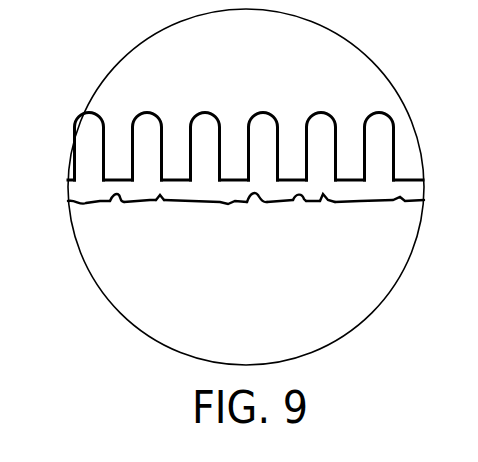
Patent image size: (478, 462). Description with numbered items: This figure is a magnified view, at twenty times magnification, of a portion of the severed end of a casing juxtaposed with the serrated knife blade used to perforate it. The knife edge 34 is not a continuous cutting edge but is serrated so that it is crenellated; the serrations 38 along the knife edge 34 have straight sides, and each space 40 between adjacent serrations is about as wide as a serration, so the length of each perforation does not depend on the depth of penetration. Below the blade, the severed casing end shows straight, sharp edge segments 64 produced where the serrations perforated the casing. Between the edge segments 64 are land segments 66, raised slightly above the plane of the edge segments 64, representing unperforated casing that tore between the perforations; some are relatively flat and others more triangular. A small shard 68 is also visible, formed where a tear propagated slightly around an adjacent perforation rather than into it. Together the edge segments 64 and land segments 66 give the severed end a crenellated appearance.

The knife edge 34 is at (367, 77).
The serration 38 is at (227, 130).
The space 40 is at (262, 133).
The straight, sharp edge segment 64 is at (120, 195).
The land segment 66 is at (158, 203).
The shard 68 is at (265, 203).